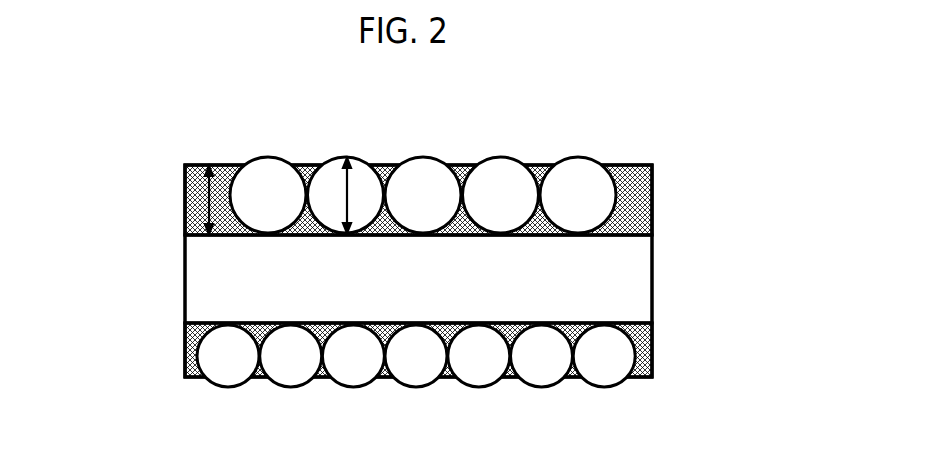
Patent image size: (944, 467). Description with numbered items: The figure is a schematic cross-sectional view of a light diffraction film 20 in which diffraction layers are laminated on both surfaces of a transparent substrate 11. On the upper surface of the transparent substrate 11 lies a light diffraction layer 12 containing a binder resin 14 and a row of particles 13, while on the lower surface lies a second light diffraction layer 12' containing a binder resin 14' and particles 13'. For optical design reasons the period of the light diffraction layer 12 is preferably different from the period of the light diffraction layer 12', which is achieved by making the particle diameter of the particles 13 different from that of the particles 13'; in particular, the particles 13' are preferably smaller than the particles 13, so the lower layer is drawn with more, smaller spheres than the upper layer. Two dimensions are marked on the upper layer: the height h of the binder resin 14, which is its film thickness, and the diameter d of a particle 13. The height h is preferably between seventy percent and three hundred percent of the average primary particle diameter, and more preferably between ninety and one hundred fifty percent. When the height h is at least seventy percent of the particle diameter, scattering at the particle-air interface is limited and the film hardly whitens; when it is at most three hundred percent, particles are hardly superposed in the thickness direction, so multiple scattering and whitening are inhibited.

The light diffraction film 20 is at (85, 155).
The transparent substrate 11 is at (640, 290).
The light diffraction layer 12 is at (377, 195).
The light diffraction layer 12' is at (376, 350).
The particles 13 is at (472, 163).
The particles 13' is at (468, 387).
The binder resin 14 is at (480, 196).
The binder resin 14' is at (481, 358).
The height of the binder resin h is at (222, 182).
The particle diameter d is at (348, 198).